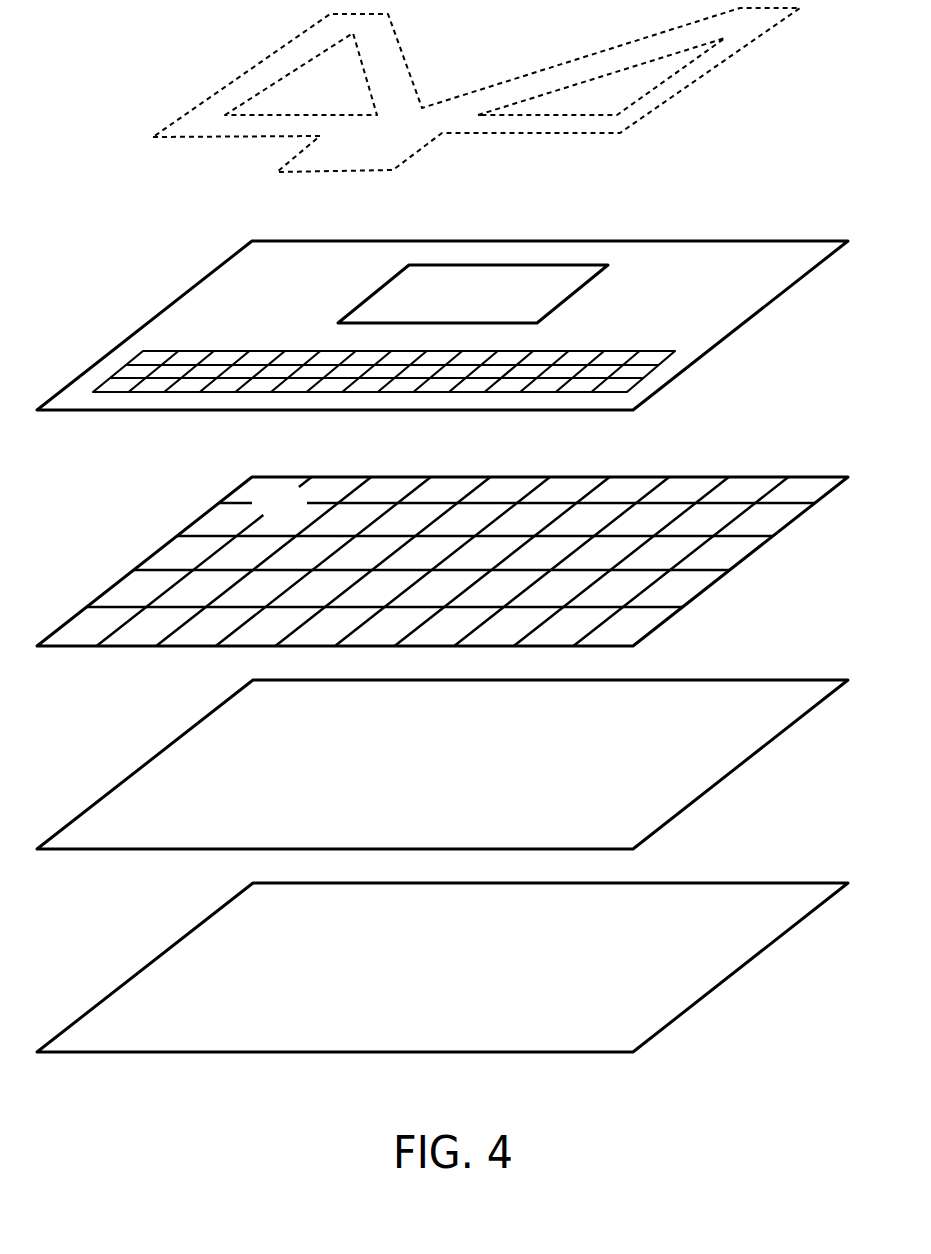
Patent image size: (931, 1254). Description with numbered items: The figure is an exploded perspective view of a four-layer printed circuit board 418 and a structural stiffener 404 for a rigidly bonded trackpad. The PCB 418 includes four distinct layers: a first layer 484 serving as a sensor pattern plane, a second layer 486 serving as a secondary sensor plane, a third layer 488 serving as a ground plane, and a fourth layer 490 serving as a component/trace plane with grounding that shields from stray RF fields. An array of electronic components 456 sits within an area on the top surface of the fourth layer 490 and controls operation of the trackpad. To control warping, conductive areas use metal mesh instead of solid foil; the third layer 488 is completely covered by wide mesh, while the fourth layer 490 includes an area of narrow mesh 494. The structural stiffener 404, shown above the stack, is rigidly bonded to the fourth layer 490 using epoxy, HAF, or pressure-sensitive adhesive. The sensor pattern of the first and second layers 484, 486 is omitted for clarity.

The structural stiffener 404 is at (385, 156).
The printed circuit board 418 is at (127, 231).
The fourth layer 490 is at (294, 279).
The electronic components 456 is at (482, 303).
The area of narrow mesh 494 is at (568, 352).
The third layer 488 is at (299, 515).
The second layer 486 is at (297, 729).
The first layer 484 is at (292, 918).